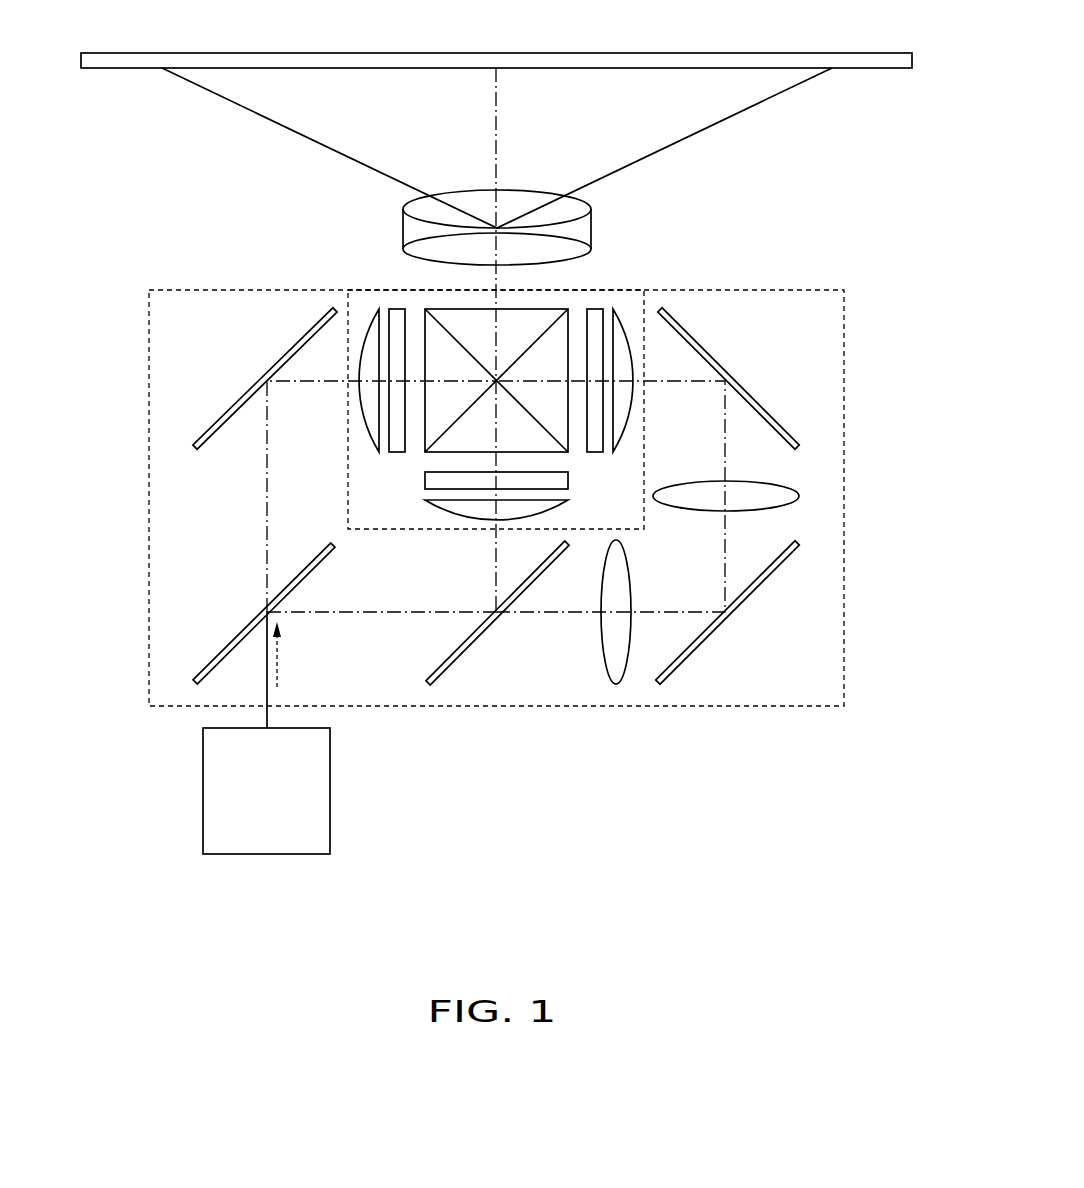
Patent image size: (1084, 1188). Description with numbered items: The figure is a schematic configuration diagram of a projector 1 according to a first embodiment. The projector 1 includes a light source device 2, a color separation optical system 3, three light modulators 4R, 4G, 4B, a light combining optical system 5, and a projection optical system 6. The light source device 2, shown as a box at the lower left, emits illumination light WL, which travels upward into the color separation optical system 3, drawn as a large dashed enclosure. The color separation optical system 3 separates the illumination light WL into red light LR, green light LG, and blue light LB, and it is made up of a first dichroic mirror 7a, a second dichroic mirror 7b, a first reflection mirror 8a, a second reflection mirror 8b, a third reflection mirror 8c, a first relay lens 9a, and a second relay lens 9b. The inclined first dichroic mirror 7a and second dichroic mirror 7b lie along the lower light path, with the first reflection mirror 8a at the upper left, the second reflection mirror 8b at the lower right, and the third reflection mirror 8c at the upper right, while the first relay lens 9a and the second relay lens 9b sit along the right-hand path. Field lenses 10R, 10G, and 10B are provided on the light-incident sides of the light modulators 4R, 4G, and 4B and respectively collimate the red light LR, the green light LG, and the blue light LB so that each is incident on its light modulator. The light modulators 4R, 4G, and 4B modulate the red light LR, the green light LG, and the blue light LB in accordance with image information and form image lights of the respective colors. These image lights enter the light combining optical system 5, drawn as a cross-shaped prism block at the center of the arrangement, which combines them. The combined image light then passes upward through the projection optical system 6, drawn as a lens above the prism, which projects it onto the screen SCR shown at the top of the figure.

The projector 1 is at (854, 262).
The light source device 2 is at (330, 788).
The color separation optical system 3 is at (149, 439).
The light modulator 4R is at (398, 308).
The light modulator 4G is at (432, 481).
The light modulator 4B is at (594, 308).
The light combining optical system 5 is at (519, 315).
The projection optical system 6 is at (476, 205).
The first dichroic mirror 7a is at (228, 645).
The second dichroic mirror 7b is at (472, 645).
The first reflection mirror 8a is at (243, 397).
The second reflection mirror 8b is at (753, 597).
The third reflection mirror 8c is at (755, 398).
The first relay lens 9a is at (602, 634).
The second relay lens 9b is at (783, 486).
The field lens 10R is at (375, 308).
The field lens 10G is at (432, 505).
The field lens 10B is at (618, 308).
The screen SCR is at (878, 69).
The illumination light WL is at (280, 667).
The red light LR is at (267, 518).
The green light LG is at (496, 565).
The blue light LB is at (725, 557).